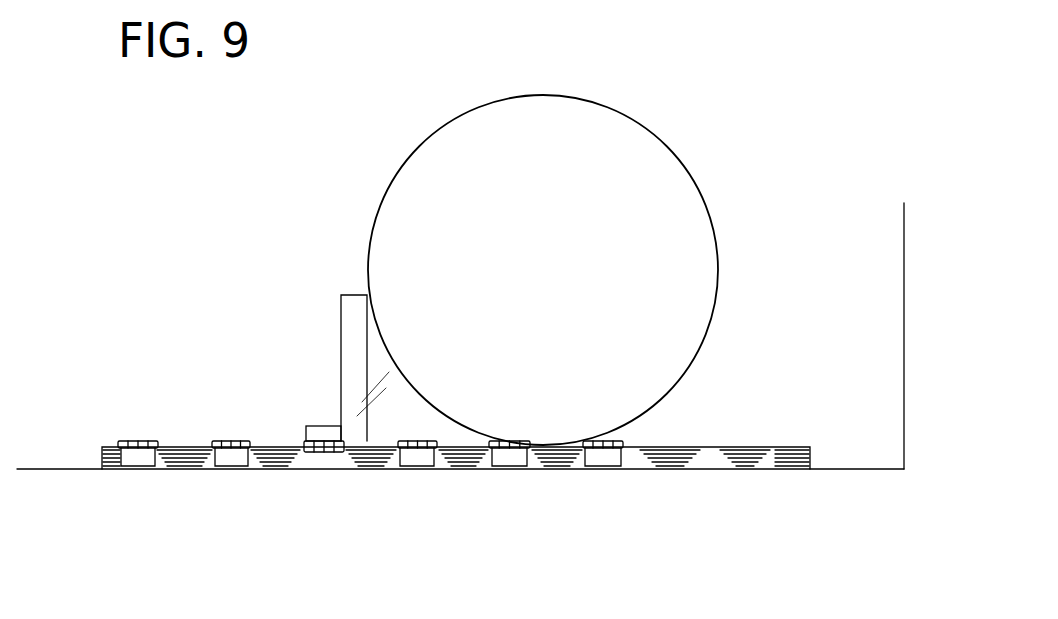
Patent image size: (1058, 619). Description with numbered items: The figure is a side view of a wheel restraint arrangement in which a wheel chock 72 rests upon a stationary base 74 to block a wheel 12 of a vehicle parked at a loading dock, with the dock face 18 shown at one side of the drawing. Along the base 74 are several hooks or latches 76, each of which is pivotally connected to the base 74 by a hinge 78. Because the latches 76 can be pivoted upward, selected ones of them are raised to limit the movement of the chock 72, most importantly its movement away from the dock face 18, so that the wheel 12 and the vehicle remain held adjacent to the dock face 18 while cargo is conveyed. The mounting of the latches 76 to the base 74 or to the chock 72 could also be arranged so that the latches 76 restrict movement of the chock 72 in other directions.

The wheel 12 is at (698, 187).
The dock face 18 is at (904, 288).
The wheel chock 72 is at (340, 320).
The stationary base 74 is at (181, 445).
The latch 76 is at (322, 425).
The hinge 78 is at (227, 441).